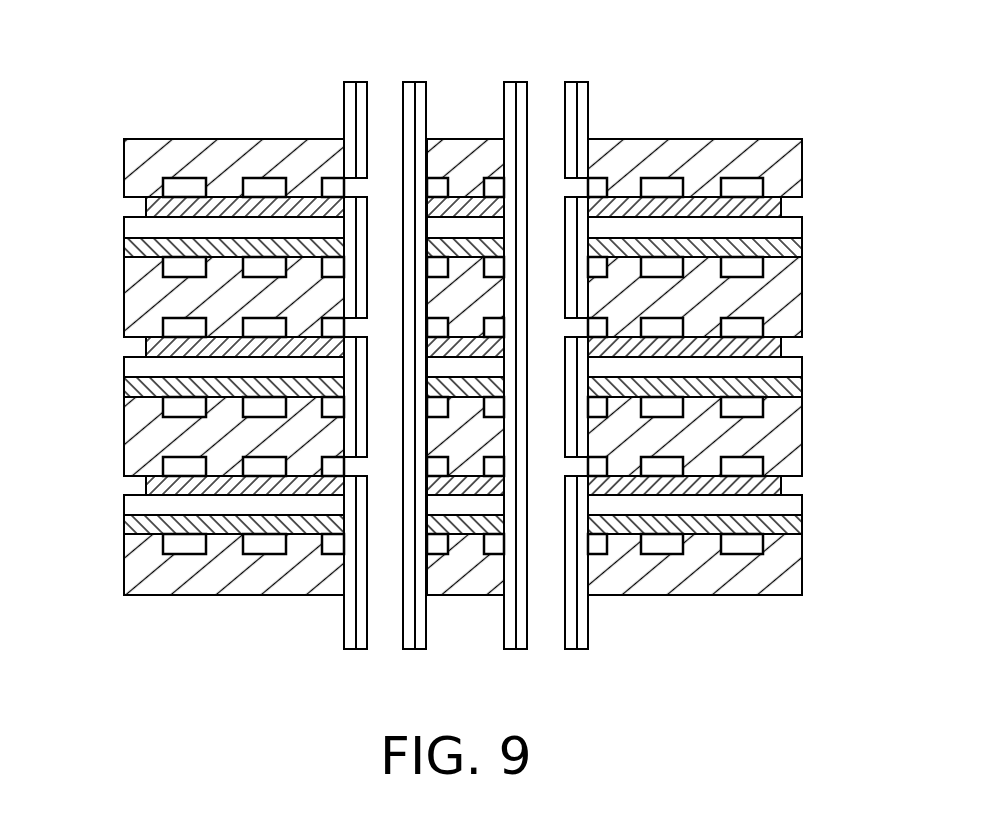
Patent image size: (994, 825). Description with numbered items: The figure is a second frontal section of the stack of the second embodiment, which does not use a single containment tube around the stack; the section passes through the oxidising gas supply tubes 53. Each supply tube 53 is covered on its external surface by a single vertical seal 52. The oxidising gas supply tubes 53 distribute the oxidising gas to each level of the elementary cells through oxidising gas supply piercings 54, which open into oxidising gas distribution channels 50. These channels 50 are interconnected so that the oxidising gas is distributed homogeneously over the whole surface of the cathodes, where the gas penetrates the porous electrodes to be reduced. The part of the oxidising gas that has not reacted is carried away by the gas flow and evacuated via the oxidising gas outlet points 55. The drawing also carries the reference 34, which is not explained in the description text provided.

The edge contact pad (left) 34 is at (339, 190).
The oxidising gas distribution channel 50 is at (178, 185).
The vertical seal 52 is at (505, 86).
The oxidising gas supply tube 53 is at (353, 82).
The oxidising gas supply piercing 54 is at (588, 188).
The oxidising gas outlet point 55 is at (140, 208).